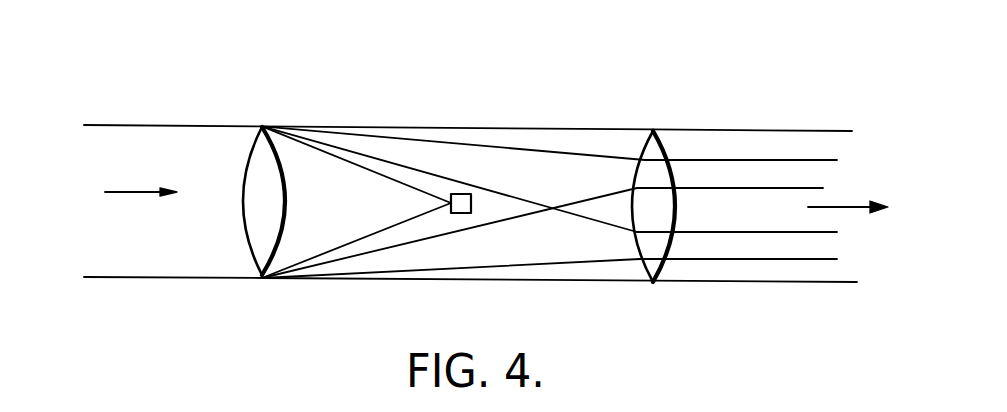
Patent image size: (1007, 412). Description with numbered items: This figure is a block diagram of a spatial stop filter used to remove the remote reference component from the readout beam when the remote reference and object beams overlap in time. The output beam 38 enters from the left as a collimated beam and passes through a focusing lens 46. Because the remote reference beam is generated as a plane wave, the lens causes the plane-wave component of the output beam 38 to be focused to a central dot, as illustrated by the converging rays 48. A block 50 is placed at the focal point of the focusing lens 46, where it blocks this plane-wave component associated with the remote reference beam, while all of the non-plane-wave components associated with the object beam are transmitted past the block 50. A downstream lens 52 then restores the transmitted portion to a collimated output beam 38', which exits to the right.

The output beam 38 is at (173, 174).
The focusing lens 46 is at (253, 142).
The rays 48 is at (372, 172).
The block 50 is at (472, 192).
The downstream lens 52 is at (640, 150).
The collimated output beam 38' is at (762, 185).